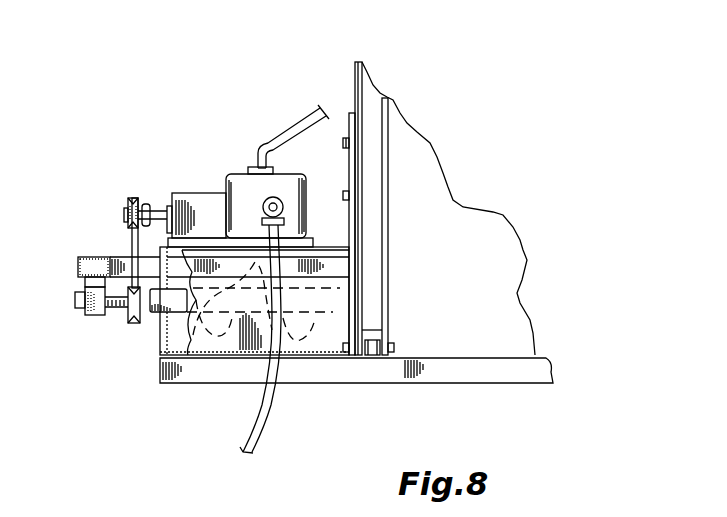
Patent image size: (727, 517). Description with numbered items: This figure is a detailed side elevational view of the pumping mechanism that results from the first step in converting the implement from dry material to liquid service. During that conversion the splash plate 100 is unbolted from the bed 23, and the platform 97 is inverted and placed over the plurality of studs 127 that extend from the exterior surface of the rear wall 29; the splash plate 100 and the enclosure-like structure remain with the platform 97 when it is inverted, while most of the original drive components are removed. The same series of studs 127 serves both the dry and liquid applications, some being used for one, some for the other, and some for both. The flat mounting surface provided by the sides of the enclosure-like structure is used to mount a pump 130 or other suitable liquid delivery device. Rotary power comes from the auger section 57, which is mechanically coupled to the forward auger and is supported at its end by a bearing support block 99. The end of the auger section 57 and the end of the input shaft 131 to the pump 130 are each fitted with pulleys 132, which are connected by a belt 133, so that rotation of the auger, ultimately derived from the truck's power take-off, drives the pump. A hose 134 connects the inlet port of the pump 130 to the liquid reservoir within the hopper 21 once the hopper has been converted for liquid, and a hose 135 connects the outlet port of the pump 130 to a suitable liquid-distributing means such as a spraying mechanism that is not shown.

The hopper 21 is at (427, 203).
The bed 23 is at (337, 370).
The rear wall 29 is at (353, 93).
The auger section 57 is at (161, 343).
The platform 97 is at (78, 268).
The bearing support block 99 is at (95, 315).
The splash plate 100 is at (348, 167).
The studs 127 is at (345, 143).
The pump 130 is at (238, 217).
The input shaft 131 is at (155, 210).
The pulleys 132 is at (129, 210).
The belt 133 is at (135, 247).
The hose 134 is at (307, 136).
The hose 135 is at (265, 417).